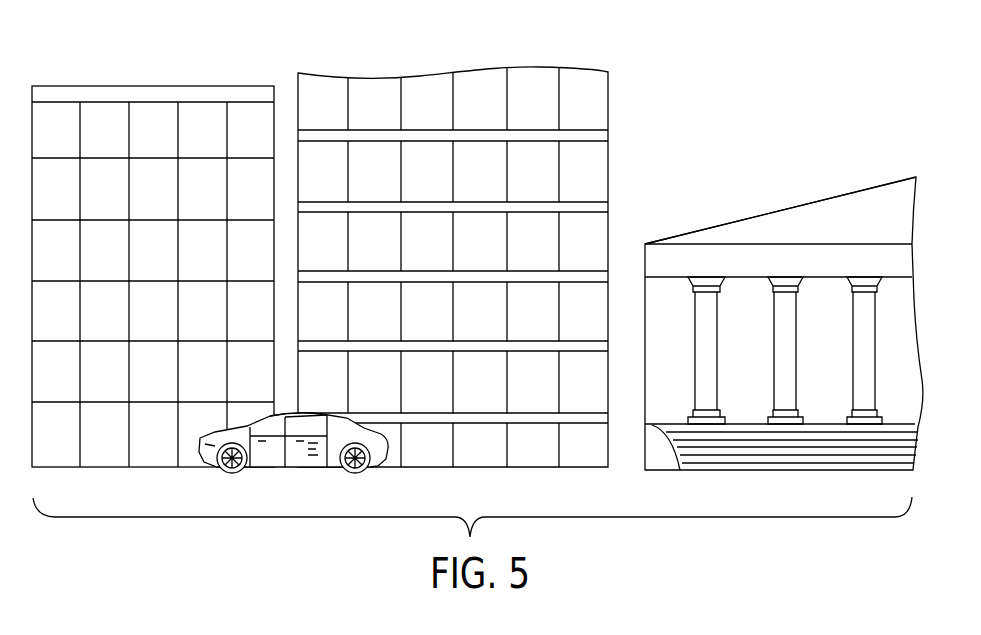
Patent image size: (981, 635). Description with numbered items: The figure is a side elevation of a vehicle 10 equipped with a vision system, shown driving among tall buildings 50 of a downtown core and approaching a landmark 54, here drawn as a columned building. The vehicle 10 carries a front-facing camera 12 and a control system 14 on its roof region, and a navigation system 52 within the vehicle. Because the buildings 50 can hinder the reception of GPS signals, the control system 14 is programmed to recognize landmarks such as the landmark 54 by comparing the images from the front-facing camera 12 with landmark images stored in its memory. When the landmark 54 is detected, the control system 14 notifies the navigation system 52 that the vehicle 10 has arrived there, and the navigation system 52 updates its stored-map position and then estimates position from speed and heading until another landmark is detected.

The vehicle 10 is at (293, 426).
The front-facing camera 12 is at (307, 422).
The control system 14 is at (332, 433).
The buildings 50 is at (251, 86).
The navigation system 52 is at (298, 473).
The landmark 54 is at (801, 205).